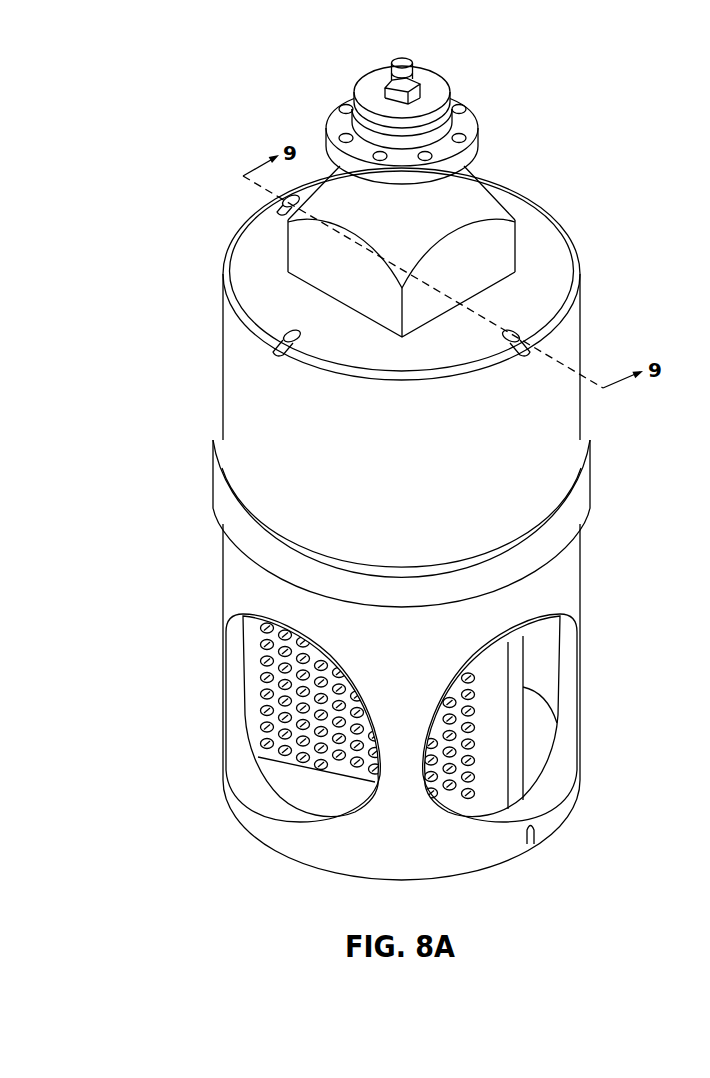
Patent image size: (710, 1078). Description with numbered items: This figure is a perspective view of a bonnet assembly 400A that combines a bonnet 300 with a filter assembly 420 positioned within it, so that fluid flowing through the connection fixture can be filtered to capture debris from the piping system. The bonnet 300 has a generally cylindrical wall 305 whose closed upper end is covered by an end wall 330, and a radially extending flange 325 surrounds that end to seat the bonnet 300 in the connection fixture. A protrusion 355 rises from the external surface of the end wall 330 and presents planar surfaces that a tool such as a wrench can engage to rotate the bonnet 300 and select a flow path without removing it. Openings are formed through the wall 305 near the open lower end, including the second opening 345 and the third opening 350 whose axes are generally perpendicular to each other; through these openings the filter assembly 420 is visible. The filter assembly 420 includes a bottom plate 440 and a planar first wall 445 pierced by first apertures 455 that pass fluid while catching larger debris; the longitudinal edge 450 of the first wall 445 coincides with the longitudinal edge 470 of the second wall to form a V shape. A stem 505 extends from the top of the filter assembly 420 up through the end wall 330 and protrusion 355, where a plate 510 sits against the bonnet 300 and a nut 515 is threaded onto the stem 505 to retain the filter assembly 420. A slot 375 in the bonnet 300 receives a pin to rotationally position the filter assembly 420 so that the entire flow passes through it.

The bonnet assembly 400A is at (238, 109).
The bonnet 300 is at (220, 349).
The cylindrical wall 305 is at (248, 392).
The radially extending flange 325 is at (221, 508).
The end wall 330 is at (262, 243).
The second opening 345 is at (542, 787).
The third opening 350 is at (255, 770).
The protrusion 355 is at (453, 192).
The slot 375 is at (527, 843).
The filter assembly 420 is at (310, 779).
The bottom plate 440 is at (537, 745).
The first wall 445 is at (253, 652).
The longitudinal edge of first wall 450 is at (508, 723).
The first apertures 455 is at (265, 695).
The longitudinal edge of second wall 470 is at (525, 660).
The stem 505 is at (403, 62).
The plate 510 is at (377, 92).
The nut 515 is at (415, 92).